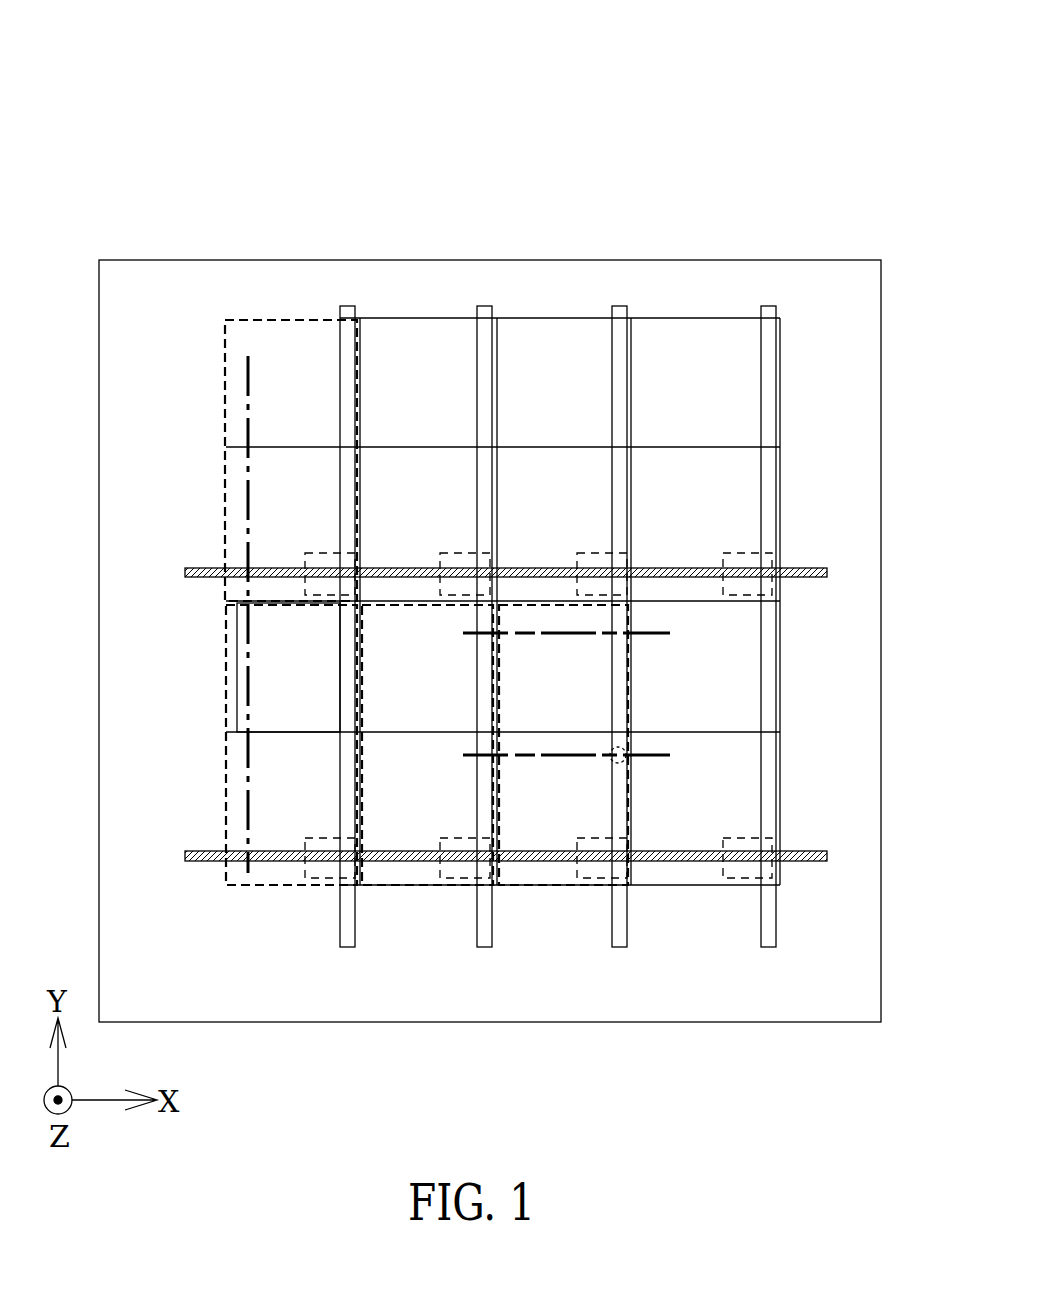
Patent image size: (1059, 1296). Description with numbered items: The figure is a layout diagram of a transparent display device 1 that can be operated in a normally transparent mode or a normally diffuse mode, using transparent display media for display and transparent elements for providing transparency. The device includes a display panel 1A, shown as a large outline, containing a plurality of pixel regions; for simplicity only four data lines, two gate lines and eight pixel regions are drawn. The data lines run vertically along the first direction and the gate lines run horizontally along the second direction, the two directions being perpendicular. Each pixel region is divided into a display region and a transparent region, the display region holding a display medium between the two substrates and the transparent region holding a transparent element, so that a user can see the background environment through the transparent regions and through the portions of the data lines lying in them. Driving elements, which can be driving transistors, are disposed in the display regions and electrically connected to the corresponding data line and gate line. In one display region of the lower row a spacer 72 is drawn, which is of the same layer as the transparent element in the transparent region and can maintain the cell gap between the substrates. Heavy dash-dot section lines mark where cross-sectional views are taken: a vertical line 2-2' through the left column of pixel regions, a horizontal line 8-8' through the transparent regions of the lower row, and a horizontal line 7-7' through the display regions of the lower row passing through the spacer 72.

The transparent display device 1 is at (670, 98).
The display panel 1A is at (239, 260).
The section line 2-2' 2 is at (273, 618).
The section line 2- 2' is at (287, 357).
The section line 7-7' 7 is at (564, 792).
The section line 7- 7' is at (676, 792).
The section line 8-8' 8 is at (564, 672).
The section line 8- 8' is at (675, 671).
The spacer 72 is at (626, 748).